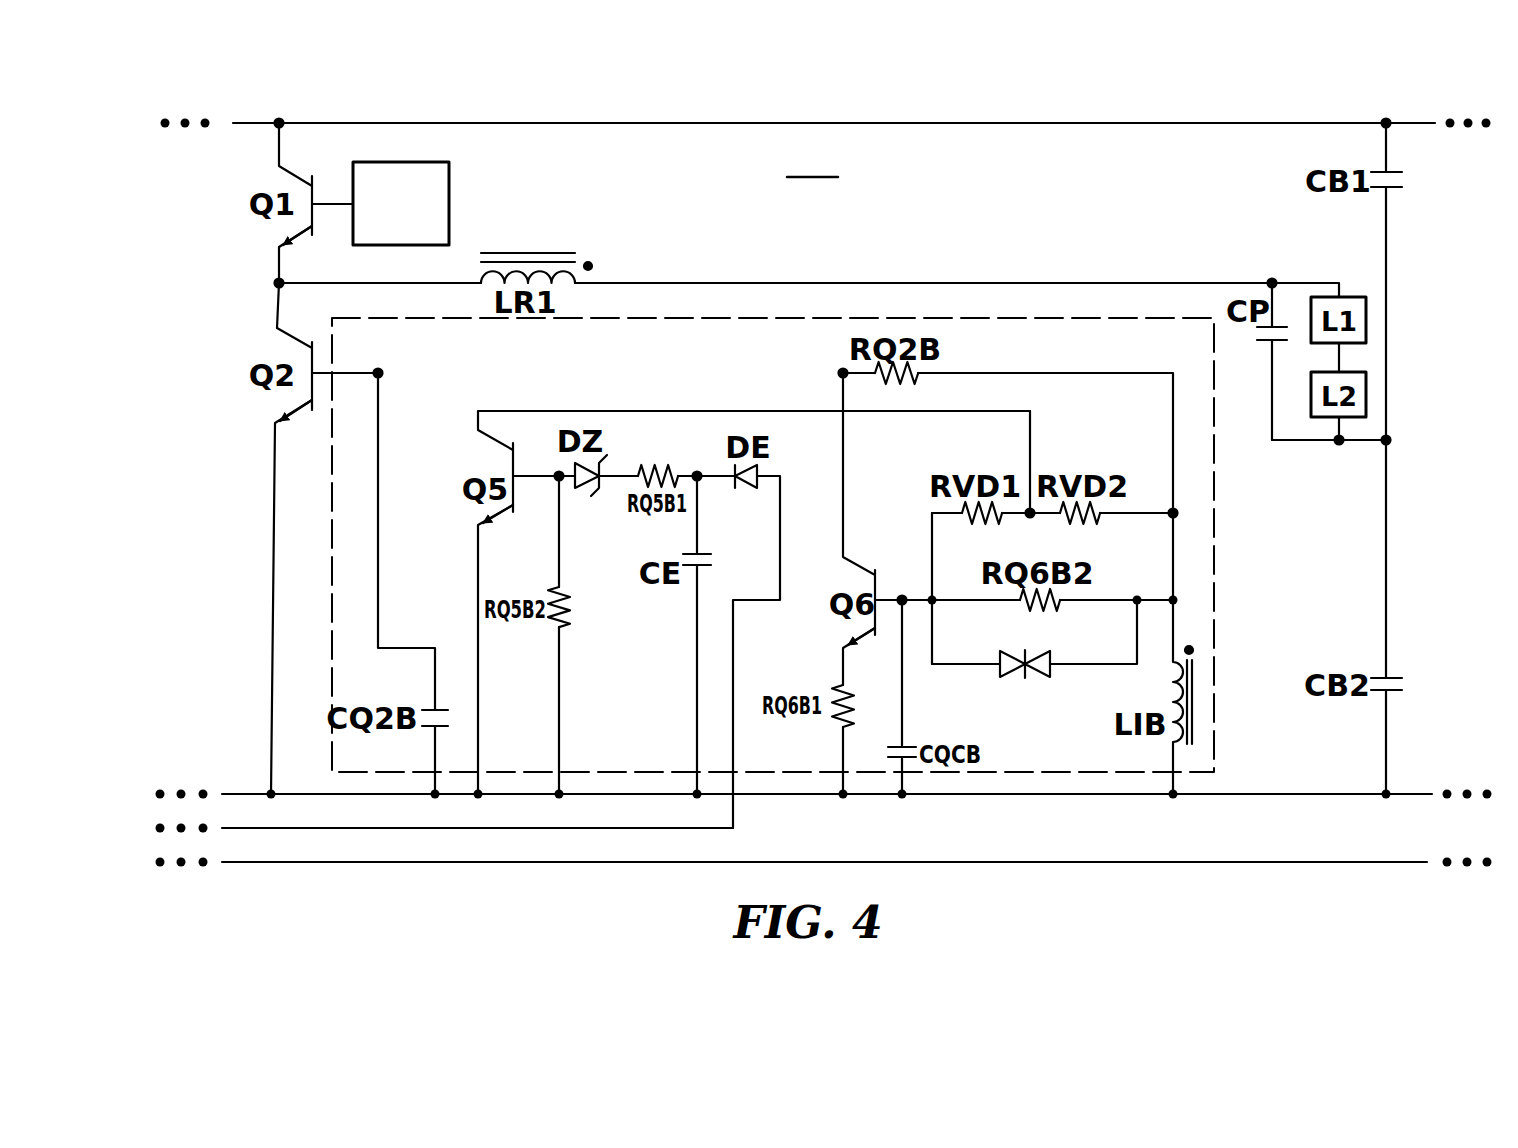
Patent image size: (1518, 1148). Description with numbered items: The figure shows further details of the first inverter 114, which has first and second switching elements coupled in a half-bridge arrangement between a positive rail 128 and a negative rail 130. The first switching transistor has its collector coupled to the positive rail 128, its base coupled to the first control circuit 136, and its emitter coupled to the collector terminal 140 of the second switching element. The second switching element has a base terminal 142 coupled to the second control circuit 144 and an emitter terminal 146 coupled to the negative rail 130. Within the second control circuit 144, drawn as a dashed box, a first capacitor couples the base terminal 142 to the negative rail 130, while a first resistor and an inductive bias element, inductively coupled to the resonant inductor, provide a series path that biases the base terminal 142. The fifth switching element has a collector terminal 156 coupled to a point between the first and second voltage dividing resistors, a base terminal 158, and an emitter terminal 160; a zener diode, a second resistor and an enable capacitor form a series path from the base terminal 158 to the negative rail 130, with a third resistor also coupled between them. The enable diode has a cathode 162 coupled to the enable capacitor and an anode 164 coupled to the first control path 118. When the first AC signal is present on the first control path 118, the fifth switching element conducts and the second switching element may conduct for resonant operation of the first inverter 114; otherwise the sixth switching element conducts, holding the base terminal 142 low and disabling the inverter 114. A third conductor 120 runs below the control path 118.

The first inverter 114 is at (812, 161).
The positive rail 128 is at (462, 123).
The negative rail 130 is at (875, 797).
The first control path 118 is at (735, 812).
The ground conductor 120 is at (705, 863).
The first control circuit 136 is at (449, 213).
The collector terminal 140 is at (278, 328).
The base terminal 142 is at (322, 372).
The second control circuit 144 is at (1220, 613).
The emitter terminal 146 is at (290, 410).
The collector terminal 156 is at (478, 411).
The base terminal 158 is at (530, 482).
The emitter terminal 160 is at (485, 518).
The cathode 162 is at (713, 476).
The anode 164 is at (770, 480).